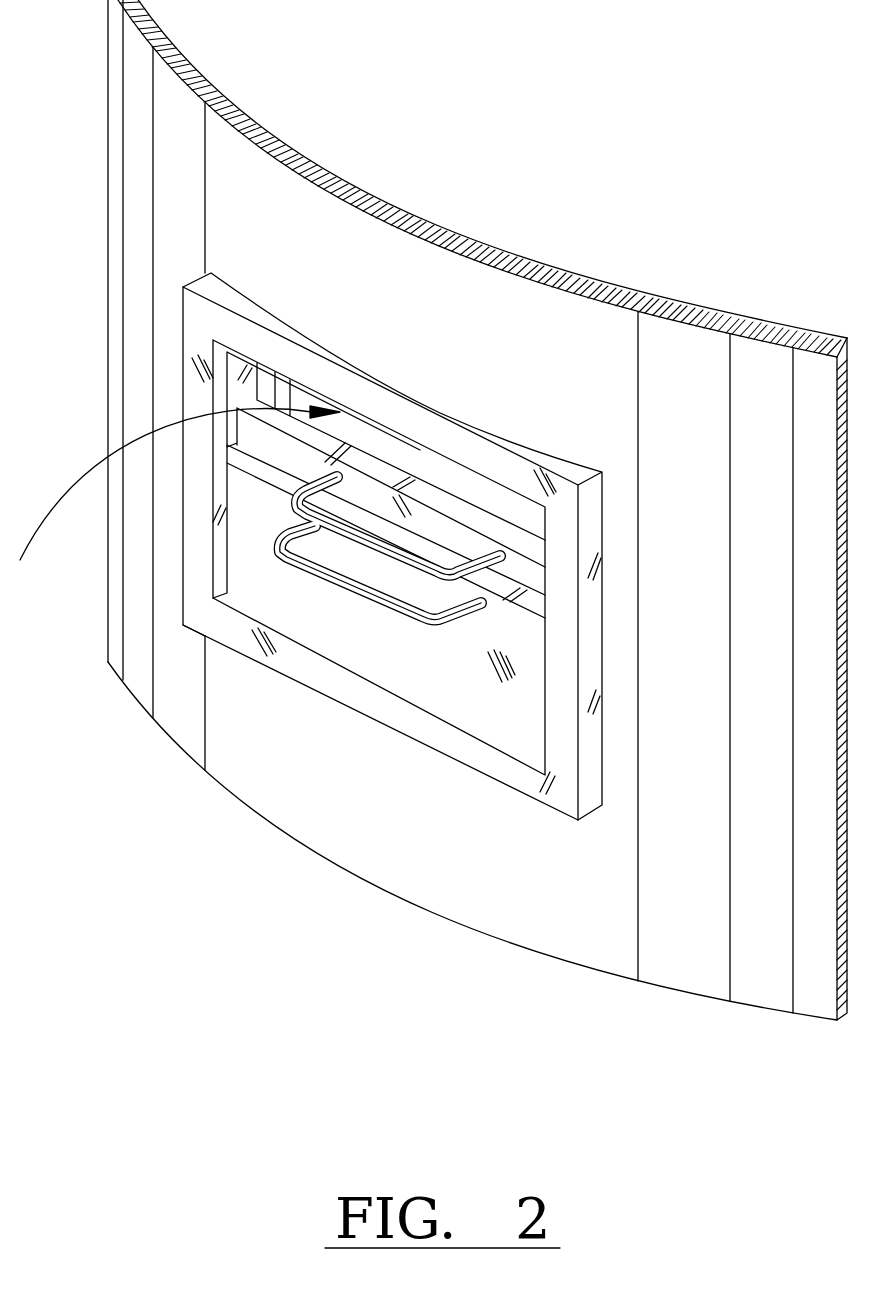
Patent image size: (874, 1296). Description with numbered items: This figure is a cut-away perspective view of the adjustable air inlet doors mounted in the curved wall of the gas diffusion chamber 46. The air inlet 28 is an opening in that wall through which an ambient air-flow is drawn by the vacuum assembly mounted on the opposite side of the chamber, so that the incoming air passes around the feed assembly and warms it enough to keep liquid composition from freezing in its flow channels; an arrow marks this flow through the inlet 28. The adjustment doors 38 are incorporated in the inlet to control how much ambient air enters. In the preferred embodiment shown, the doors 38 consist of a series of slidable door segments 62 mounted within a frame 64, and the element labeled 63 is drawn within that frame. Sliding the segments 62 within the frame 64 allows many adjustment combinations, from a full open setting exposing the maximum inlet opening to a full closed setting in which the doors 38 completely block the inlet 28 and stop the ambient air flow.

The air inlet 28 is at (178, 501).
The adjustment doors 38 is at (260, 700).
The gas diffusion chamber 46 is at (240, 64).
The slidable door segments 62 is at (495, 530).
The heating tube 63 is at (388, 545).
The frame 64 is at (602, 510).